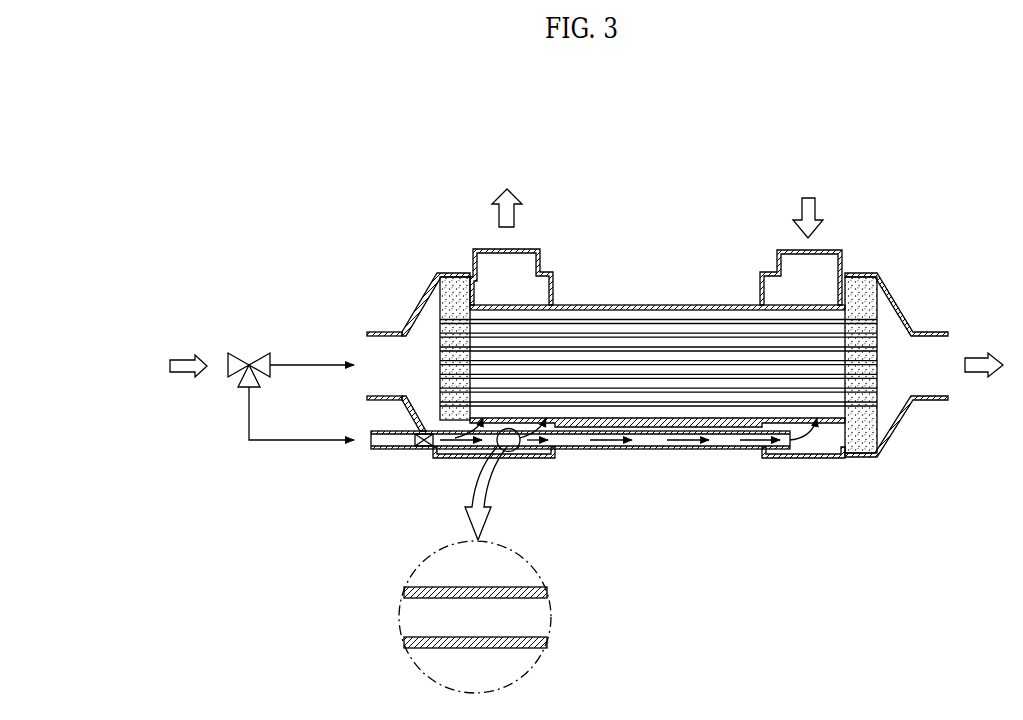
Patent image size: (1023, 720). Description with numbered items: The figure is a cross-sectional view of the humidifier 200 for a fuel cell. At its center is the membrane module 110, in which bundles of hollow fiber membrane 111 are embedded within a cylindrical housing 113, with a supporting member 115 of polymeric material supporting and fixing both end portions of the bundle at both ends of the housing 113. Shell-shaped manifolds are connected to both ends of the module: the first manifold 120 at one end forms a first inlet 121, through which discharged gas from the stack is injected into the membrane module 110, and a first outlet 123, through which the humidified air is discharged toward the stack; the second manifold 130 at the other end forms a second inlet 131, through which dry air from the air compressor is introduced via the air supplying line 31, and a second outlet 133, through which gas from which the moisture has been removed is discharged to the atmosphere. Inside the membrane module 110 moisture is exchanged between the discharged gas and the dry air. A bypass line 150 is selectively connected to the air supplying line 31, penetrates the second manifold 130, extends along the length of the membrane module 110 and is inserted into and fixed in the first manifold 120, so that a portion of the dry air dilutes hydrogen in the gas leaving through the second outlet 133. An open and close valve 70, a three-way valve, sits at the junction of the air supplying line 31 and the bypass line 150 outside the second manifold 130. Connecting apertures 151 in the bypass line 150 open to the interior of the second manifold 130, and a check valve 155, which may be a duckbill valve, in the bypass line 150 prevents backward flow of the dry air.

The humidifier 200 is at (630, 127).
The open and close valve 70 is at (254, 352).
The air supplying line 31 is at (308, 362).
The membrane module 110 is at (651, 296).
The hollow fiber membrane 111 is at (597, 331).
The housing 113 is at (698, 303).
The supporting member 115 is at (455, 283).
The first manifold 120 is at (909, 294).
The first inlet 121 is at (775, 250).
The first outlet 123 is at (933, 400).
The second manifold 130 is at (412, 292).
The second inlet 131 is at (372, 330).
The second outlet 133 is at (472, 248).
The bypass line 150 is at (578, 458).
The connecting apertures 151 is at (440, 590).
The check valve 155 is at (426, 450).